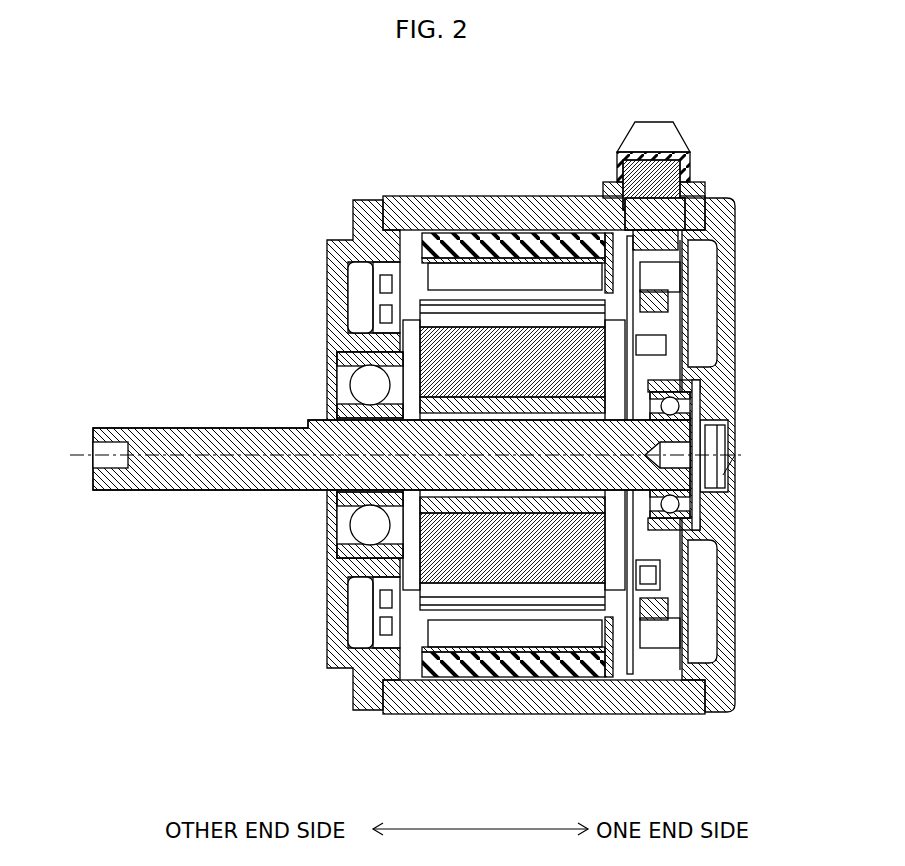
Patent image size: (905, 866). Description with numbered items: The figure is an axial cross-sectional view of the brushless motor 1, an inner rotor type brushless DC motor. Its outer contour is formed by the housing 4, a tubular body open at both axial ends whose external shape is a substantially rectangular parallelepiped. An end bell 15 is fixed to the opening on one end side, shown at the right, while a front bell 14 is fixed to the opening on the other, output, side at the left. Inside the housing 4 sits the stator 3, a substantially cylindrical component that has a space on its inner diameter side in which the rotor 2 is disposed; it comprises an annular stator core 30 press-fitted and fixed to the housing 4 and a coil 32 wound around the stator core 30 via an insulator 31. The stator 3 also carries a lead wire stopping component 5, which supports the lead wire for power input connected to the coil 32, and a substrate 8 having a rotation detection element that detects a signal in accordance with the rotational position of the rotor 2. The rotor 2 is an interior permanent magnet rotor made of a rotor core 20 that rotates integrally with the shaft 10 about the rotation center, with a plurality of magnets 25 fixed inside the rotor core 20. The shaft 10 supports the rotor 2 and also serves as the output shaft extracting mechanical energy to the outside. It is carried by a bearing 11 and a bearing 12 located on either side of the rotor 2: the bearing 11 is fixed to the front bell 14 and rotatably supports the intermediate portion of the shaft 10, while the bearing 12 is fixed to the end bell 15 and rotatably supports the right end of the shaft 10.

The brushless motor 1 is at (232, 152).
The rotor 2 is at (385, 322).
The stator 3 is at (506, 456).
The housing 4 is at (441, 715).
The lead wire stopping component 5 is at (640, 272).
The substrate 8 is at (633, 347).
The shaft 10 is at (149, 490).
The bearing 11 is at (337, 548).
The bearing 12 is at (688, 518).
The front bell 14 is at (328, 596).
The end bell 15 is at (737, 660).
The rotor core 20 is at (690, 398).
The magnets 25 is at (635, 576).
The stator core 30 is at (500, 678).
The insulator 31 is at (600, 660).
The coil 32 is at (553, 633).